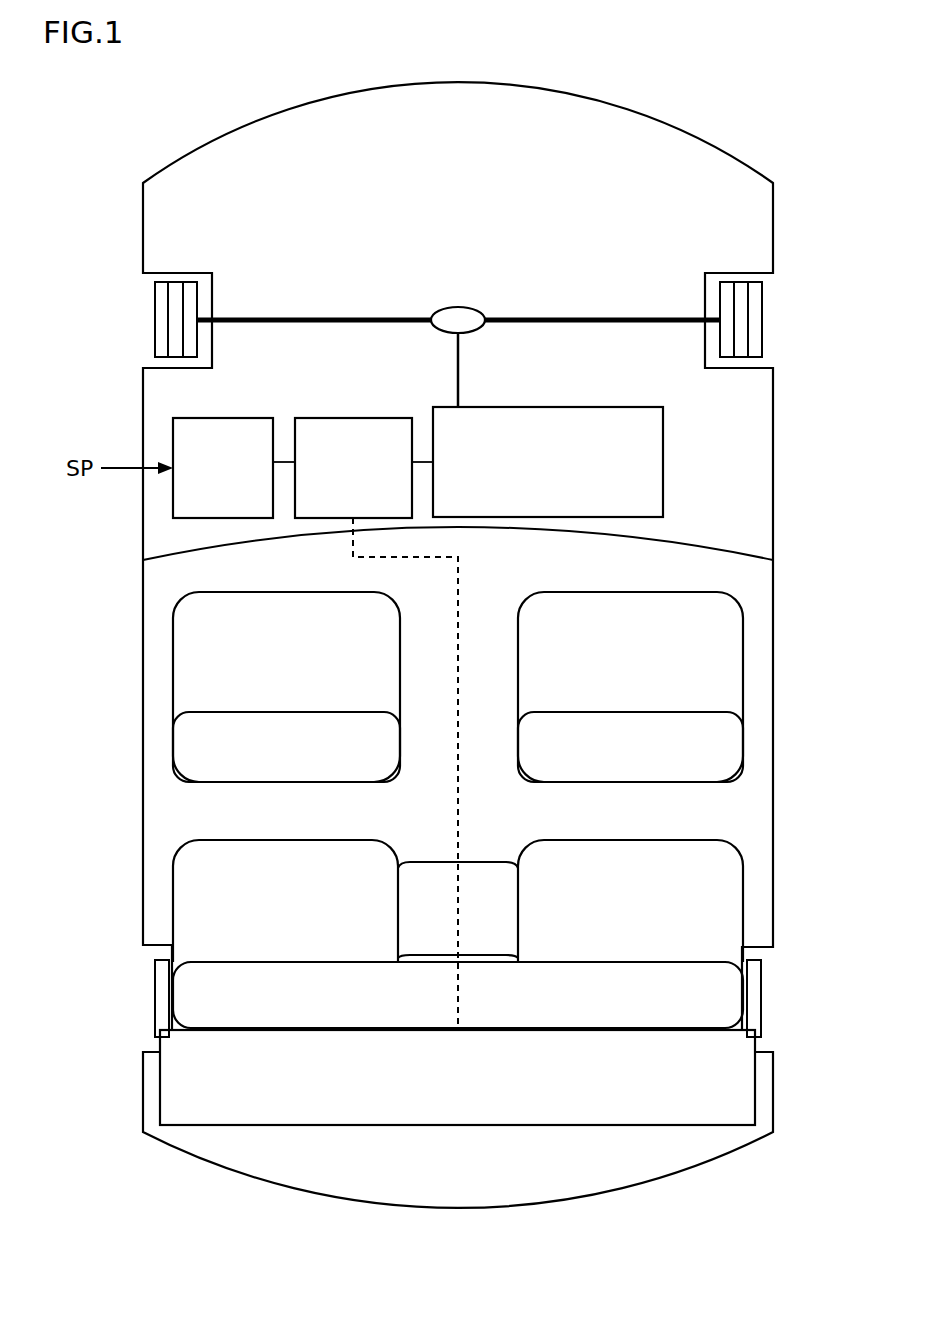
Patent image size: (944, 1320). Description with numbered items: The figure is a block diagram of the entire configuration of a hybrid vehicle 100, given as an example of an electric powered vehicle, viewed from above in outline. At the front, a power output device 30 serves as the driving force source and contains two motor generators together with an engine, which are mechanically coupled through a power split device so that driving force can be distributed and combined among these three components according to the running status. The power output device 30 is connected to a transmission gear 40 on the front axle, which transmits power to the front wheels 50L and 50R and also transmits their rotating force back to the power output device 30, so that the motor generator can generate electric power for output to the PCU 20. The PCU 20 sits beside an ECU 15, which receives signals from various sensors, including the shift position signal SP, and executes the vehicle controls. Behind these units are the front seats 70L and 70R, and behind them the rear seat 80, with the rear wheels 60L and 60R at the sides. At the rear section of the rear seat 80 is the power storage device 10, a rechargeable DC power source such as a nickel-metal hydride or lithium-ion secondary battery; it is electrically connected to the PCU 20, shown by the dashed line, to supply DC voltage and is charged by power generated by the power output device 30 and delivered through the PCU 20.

The hybrid vehicle 100 is at (481, 42).
The power storage device 10 is at (458, 1113).
The ECU 15 is at (244, 428).
The PCU 20 is at (323, 428).
The power output device 30 is at (640, 421).
The transmission gear 40 is at (456, 306).
The front wheel 50L is at (162, 322).
The front wheel 50R is at (757, 322).
The rear wheel 60L is at (158, 1000).
The rear wheel 60R is at (755, 1000).
The front seat 70L is at (285, 602).
The front seat 70R is at (630, 602).
The rear seat 80 is at (285, 850).